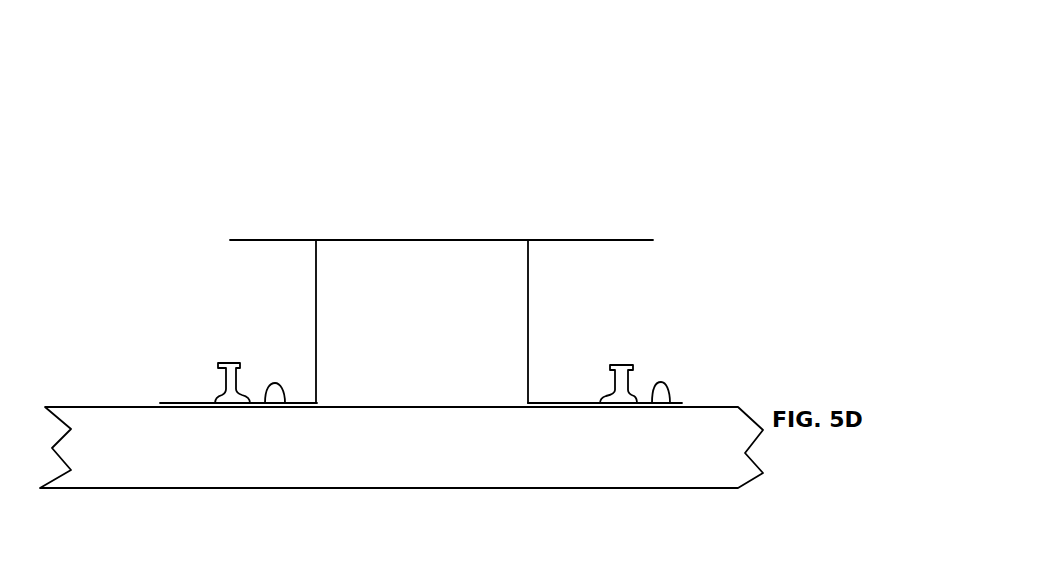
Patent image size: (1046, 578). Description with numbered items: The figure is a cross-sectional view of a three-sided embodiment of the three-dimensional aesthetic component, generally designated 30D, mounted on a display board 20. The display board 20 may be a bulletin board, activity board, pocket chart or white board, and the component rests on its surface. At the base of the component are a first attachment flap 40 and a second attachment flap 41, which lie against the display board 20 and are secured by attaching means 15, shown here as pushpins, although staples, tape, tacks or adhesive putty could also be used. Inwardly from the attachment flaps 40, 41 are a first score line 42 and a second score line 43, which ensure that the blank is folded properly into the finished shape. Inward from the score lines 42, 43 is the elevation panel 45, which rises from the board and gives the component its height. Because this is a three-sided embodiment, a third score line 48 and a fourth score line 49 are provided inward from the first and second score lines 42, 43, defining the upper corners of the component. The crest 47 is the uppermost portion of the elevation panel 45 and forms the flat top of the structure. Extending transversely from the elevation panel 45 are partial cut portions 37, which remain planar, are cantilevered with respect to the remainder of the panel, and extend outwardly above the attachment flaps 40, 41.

The 3D aesthetic component (3-sided embodiment) 30D is at (227, 128).
The display board 20 is at (415, 458).
The partial cut portions 37 is at (605, 240).
The crest 47 is at (413, 240).
The third score line 48 is at (316, 240).
The fourth score line 49 is at (529, 241).
The elevation panel 45 is at (315, 310).
The first score line 42 is at (315, 403).
The second score line 43 is at (529, 403).
The attaching means 15 is at (228, 362).
The first attachment flap 40 is at (268, 388).
The second attachment flap 41 is at (666, 387).